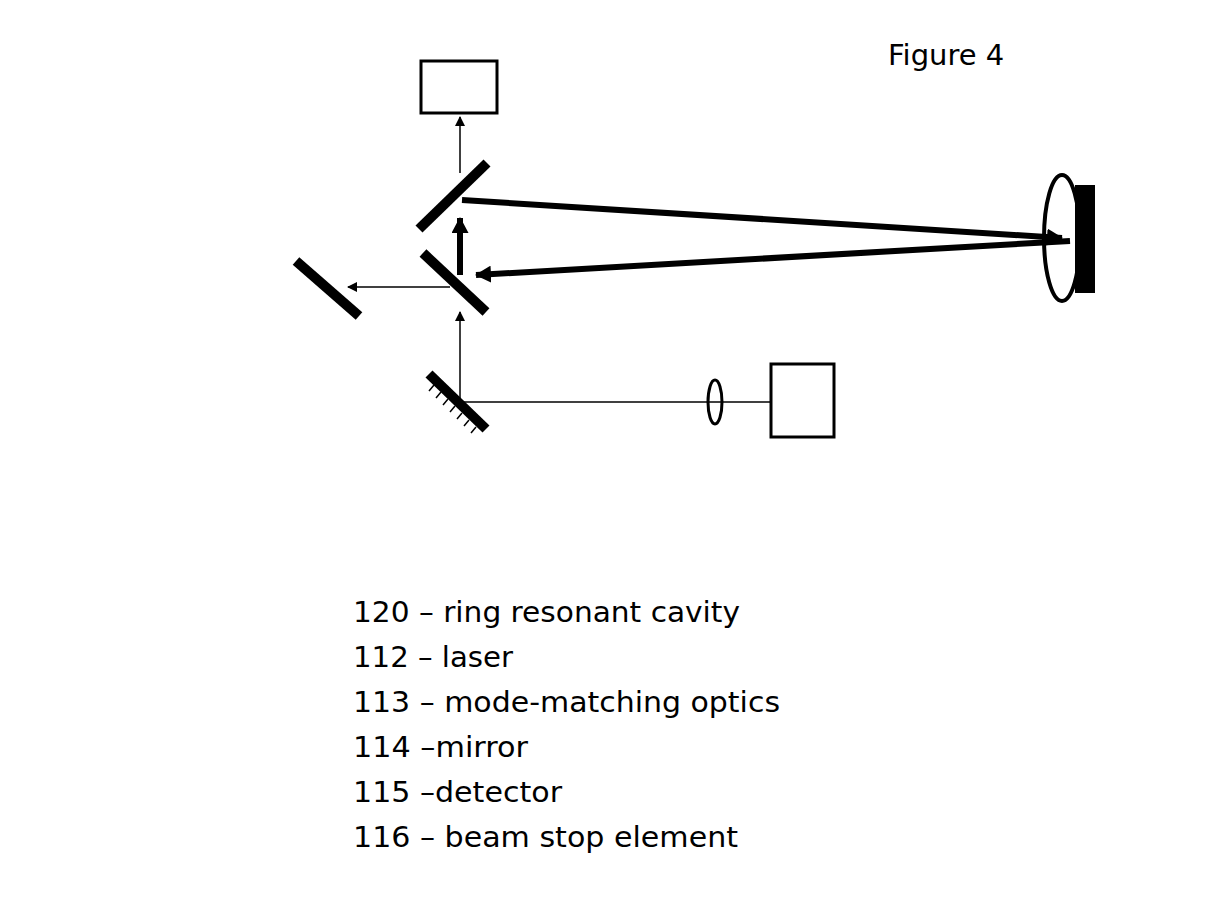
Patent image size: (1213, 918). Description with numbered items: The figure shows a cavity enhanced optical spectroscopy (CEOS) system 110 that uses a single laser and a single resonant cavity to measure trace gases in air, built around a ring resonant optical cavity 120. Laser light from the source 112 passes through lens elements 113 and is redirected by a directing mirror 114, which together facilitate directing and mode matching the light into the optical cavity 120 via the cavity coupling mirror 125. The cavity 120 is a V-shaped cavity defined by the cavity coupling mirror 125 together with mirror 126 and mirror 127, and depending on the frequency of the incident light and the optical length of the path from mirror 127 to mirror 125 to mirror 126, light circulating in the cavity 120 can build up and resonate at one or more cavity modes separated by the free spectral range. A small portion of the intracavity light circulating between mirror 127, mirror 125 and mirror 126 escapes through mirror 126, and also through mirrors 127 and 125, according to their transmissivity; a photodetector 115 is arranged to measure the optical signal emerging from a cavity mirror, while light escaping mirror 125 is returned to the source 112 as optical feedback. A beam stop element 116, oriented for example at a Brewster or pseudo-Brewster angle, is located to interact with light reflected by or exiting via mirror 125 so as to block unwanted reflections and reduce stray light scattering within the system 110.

The CEOS system 110 is at (310, 125).
The laser source 112 is at (844, 403).
The lens elements 113 is at (693, 431).
The directing mirror 114 is at (438, 413).
The photodetector 115 is at (500, 78).
The beam stop element 116 is at (324, 301).
The ring resonant optical cavity 120 is at (765, 220).
The cavity coupling mirror 125 is at (489, 297).
The mirror 126 is at (487, 193).
The mirror 127 is at (1112, 238).